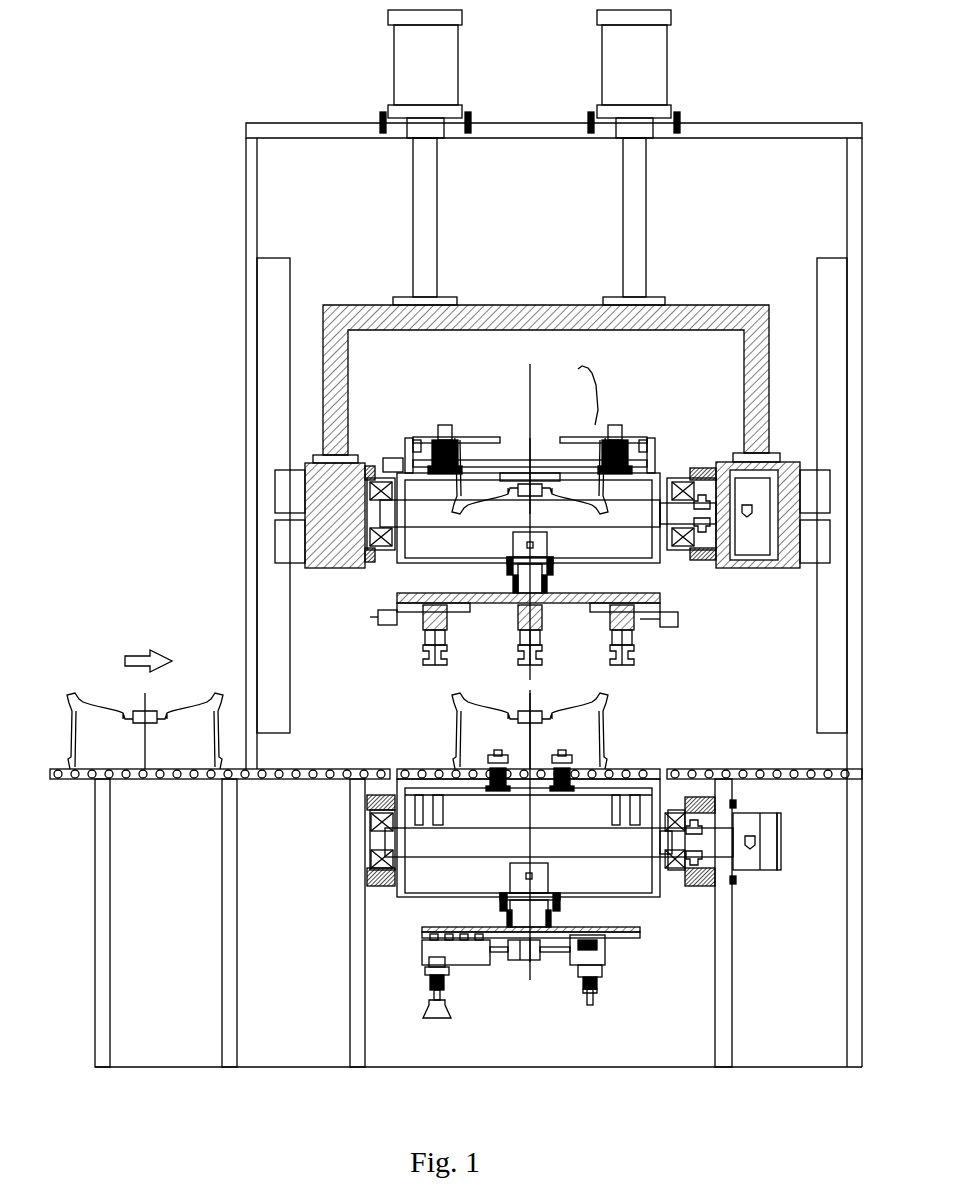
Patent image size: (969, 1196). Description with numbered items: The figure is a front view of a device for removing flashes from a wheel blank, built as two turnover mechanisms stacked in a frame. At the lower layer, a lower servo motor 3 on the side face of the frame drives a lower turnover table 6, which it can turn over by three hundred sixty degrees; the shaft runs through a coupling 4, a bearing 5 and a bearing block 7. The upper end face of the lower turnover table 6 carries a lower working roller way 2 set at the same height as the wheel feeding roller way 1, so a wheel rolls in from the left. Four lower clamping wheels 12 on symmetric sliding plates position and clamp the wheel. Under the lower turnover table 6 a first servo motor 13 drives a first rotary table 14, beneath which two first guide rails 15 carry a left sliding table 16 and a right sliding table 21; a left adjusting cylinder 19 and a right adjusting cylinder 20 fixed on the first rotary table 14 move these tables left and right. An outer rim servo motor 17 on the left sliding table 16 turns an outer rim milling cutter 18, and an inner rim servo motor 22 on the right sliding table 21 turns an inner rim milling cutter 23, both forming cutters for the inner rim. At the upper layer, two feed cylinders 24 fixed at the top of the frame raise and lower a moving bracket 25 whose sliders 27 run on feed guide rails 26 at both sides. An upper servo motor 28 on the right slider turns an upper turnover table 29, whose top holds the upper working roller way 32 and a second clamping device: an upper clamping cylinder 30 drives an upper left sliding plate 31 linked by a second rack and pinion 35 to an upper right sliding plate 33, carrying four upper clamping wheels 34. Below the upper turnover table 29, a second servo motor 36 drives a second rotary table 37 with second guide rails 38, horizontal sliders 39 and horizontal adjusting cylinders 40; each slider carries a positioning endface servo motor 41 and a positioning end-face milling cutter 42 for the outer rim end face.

The wheel feeding roller way 1 is at (195, 747).
The lower working roller way 2 is at (515, 810).
The lower servo motor 3 is at (775, 826).
The coupling 4 is at (742, 814).
The bearing 5 is at (347, 832).
The lower turnover table 6 is at (516, 830).
The bearing block 7 is at (347, 842).
The lower clamping wheel 12 is at (468, 740).
The first servo motor 13 is at (504, 873).
The first rotary table 14 is at (531, 912).
The first guide rail 15 is at (393, 910).
The left sliding table 16 is at (372, 928).
The outer rim servo motor 17 is at (370, 953).
The outer rim milling cutter 18 is at (373, 982).
The left adjusting cylinder 19 is at (520, 975).
The right adjusting cylinder 20 is at (572, 986).
The right sliding table 21 is at (602, 904).
The inner rim servo motor 22 is at (676, 928).
The inner rim milling cutter 23 is at (683, 972).
The feed cylinder 24 is at (488, 157).
The moving bracket 25 is at (483, 366).
The feed guide rail 26 is at (243, 495).
The slider 27 is at (281, 475).
The upper servo motor 28 is at (813, 482).
The upper turnover table 29 is at (550, 479).
The upper clamping cylinder 30 is at (505, 489).
The upper left sliding plate 31 is at (385, 430).
The upper working roller way 32 is at (491, 417).
The upper right sliding plate 33 is at (680, 440).
The upper clamping wheel 34 is at (567, 431).
The second rack and pinion 35 is at (567, 399).
The second servo motor 36 is at (503, 529).
The second rotary table 37 is at (507, 576).
The second guide rail 38 is at (560, 581).
The horizontal slider 39 is at (656, 625).
The horizontal adjusting cylinder 40 is at (681, 622).
The positioning endface servo motor 41 is at (406, 624).
The positioning end-face milling cutter 42 is at (385, 633).